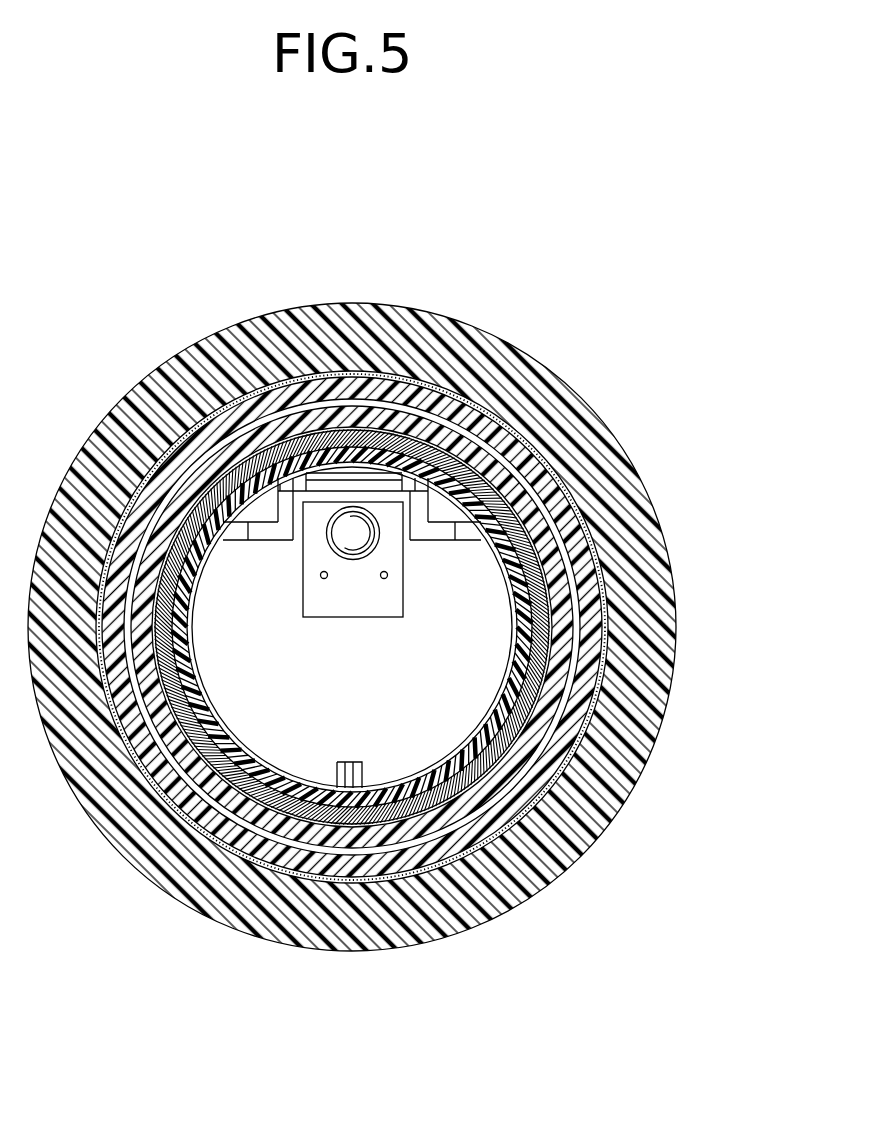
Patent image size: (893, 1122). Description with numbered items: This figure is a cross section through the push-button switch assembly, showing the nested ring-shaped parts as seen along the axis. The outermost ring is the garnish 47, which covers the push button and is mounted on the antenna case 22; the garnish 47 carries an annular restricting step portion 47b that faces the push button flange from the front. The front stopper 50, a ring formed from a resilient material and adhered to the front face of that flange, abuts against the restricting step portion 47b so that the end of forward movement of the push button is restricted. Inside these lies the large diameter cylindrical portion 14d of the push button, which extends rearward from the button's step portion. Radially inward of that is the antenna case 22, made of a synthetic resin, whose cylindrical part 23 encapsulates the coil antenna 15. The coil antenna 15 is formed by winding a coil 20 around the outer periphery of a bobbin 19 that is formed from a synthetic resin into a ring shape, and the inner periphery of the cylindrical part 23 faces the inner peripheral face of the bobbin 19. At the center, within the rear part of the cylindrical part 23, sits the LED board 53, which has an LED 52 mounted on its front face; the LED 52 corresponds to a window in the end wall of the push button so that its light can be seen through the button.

The garnish 47 is at (225, 313).
The restricting step portion 47b is at (507, 352).
The front stopper 50 is at (537, 453).
The antenna case 22 is at (562, 558).
The cylindrical part 23 is at (575, 613).
The large diameter cylindrical portion 14d is at (578, 718).
The coil antenna 15 is at (455, 818).
The bobbin 19 is at (519, 696).
The coil 20 is at (422, 806).
The LED 52 is at (333, 540).
The LED board 53 is at (310, 600).